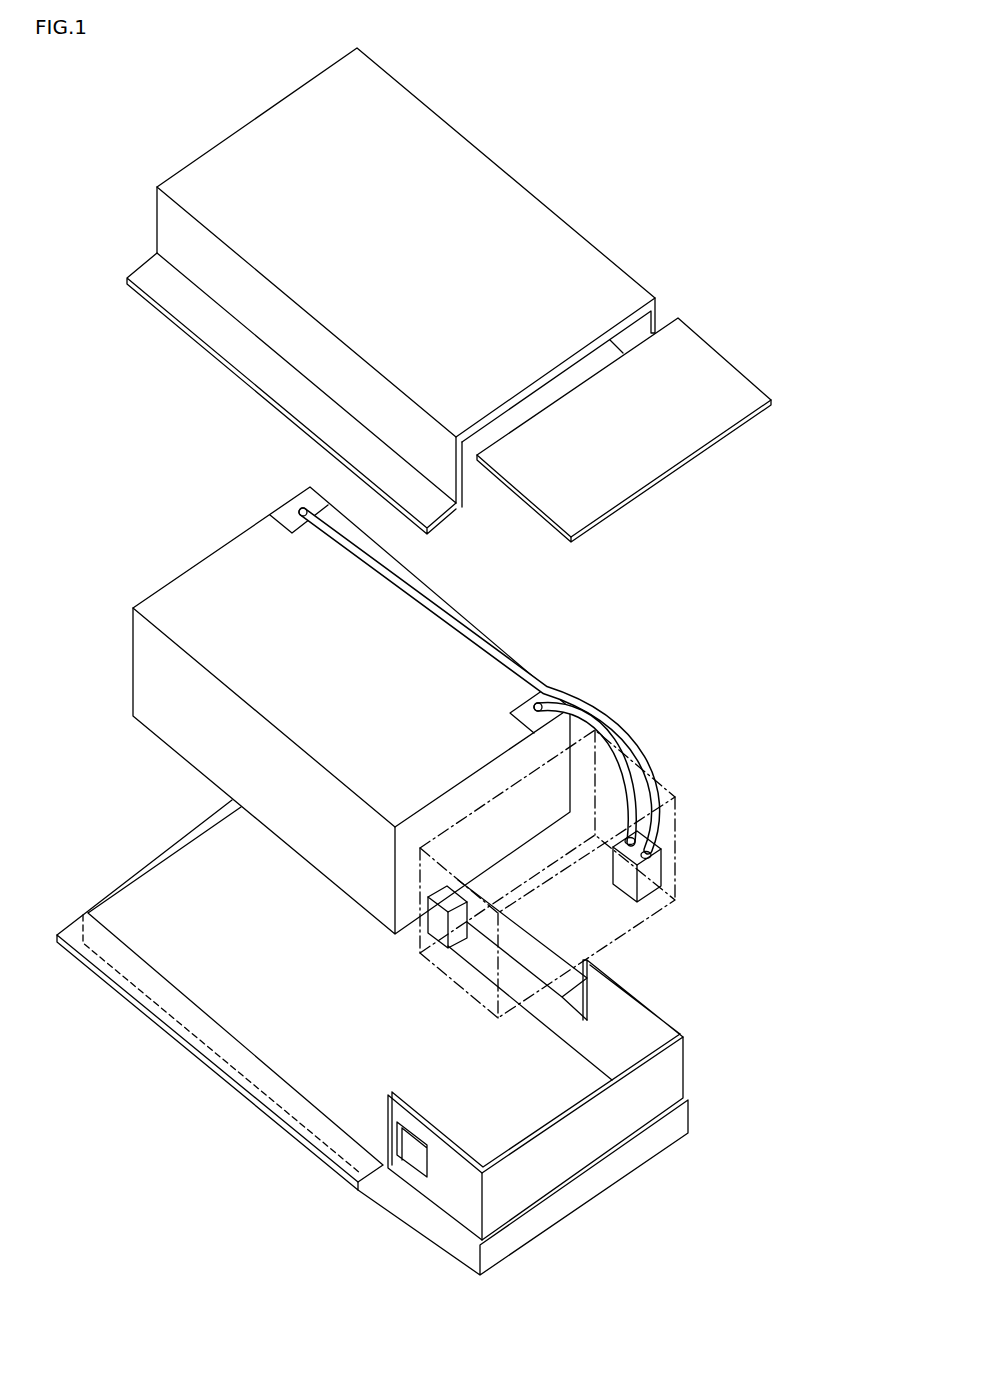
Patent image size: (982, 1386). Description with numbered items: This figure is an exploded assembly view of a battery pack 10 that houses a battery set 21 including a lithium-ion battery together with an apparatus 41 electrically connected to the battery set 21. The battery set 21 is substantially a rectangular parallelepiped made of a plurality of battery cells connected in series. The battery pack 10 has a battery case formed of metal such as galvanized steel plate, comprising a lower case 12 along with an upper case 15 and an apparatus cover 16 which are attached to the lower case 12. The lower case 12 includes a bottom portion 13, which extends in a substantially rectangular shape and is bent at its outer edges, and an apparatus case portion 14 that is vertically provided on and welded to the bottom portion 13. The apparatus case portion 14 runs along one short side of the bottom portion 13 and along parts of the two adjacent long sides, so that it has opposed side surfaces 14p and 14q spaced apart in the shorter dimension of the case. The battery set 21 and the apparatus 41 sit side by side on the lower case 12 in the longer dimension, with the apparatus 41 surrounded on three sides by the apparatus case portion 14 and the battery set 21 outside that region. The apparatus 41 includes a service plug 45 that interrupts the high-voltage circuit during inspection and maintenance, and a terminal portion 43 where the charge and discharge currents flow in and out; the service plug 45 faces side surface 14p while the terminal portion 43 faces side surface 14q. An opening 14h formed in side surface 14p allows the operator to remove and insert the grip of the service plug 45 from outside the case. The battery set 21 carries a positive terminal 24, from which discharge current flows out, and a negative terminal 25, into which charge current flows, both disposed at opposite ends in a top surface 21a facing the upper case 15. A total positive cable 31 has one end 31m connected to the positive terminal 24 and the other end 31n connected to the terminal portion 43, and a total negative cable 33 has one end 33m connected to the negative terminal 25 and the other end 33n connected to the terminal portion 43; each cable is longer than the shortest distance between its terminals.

The battery pack 10 is at (659, 112).
The lower case 12 is at (537, 1280).
The bottom portion 13 is at (547, 1217).
The apparatus case portion 14 is at (567, 1143).
The opening 14h is at (403, 1153).
The side surface 14p is at (457, 1175).
The side surface 14q is at (622, 1028).
The upper case 15 is at (298, 120).
The apparatus cover 16 is at (730, 358).
The battery set 21 is at (213, 550).
The top surface 21a is at (200, 598).
The positive terminal 24 is at (282, 517).
The negative terminal 25 is at (550, 688).
The total positive cable 31 is at (487, 623).
The one end 31m is at (298, 503).
The other end 31n is at (657, 859).
The total negative cable 33 is at (627, 773).
The one end 33m is at (528, 703).
The other end 33n is at (650, 840).
The apparatus 41 is at (676, 792).
The terminal portion 43 is at (628, 880).
The service plug 45 is at (430, 925).